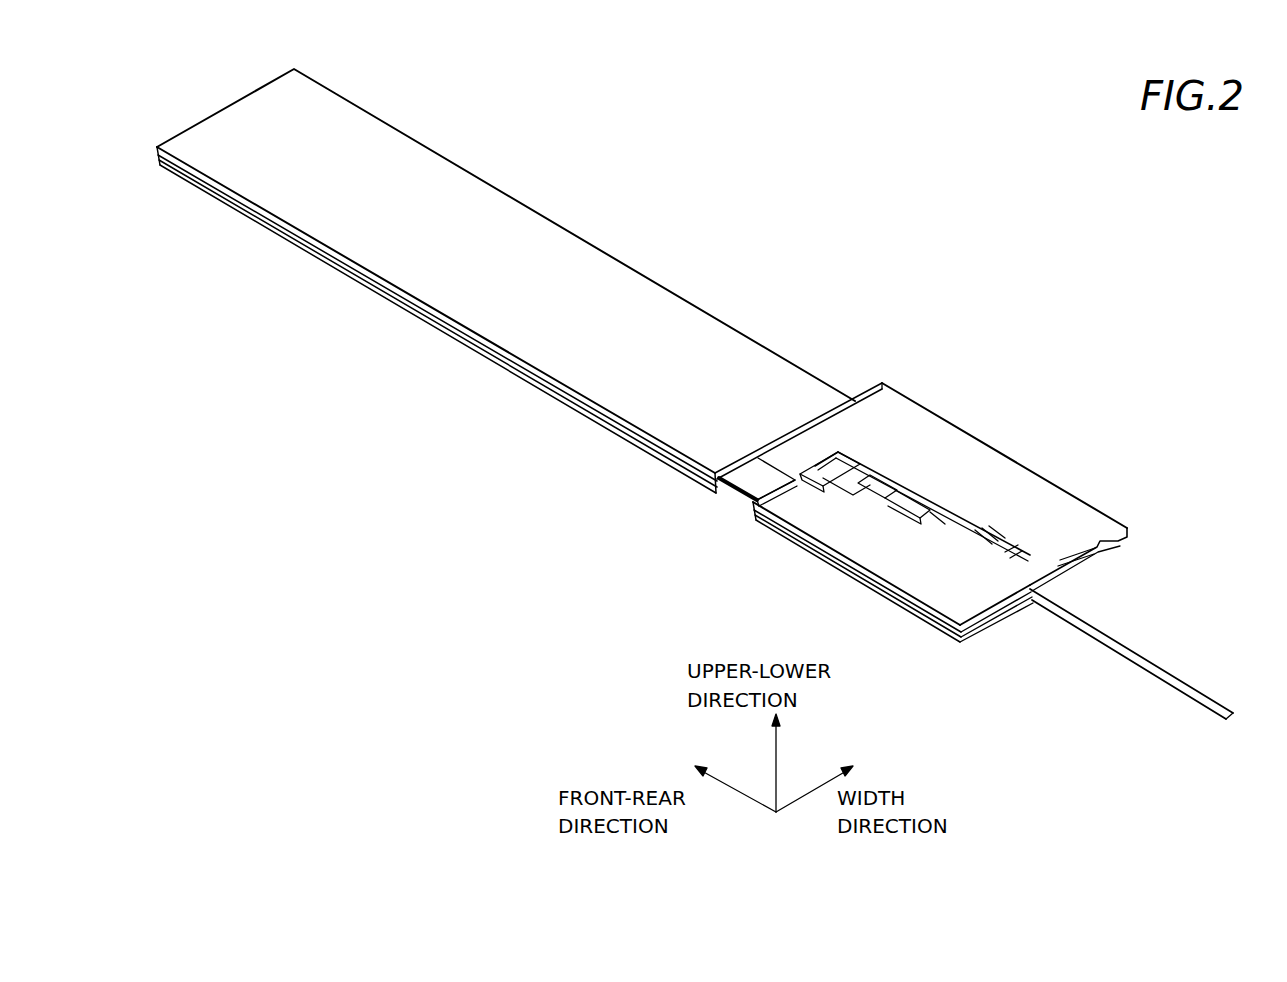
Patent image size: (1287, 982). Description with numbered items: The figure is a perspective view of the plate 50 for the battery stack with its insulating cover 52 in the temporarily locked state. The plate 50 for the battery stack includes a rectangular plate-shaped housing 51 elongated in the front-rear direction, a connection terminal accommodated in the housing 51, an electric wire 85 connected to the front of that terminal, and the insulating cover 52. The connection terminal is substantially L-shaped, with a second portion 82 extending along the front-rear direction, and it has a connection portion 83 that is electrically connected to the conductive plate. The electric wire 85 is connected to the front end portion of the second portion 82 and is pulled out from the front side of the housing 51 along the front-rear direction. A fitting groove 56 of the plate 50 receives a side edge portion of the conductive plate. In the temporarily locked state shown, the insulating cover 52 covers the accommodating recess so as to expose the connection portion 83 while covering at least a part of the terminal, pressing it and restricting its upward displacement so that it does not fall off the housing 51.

The plate for the battery stack 50 is at (821, 114).
The housing 51 is at (694, 327).
The insulating cover 52 is at (975, 468).
The fitting groove 56 is at (978, 626).
The second portion 82 is at (847, 470).
The connection portion 83 is at (747, 487).
The electric wire 85 is at (1097, 640).